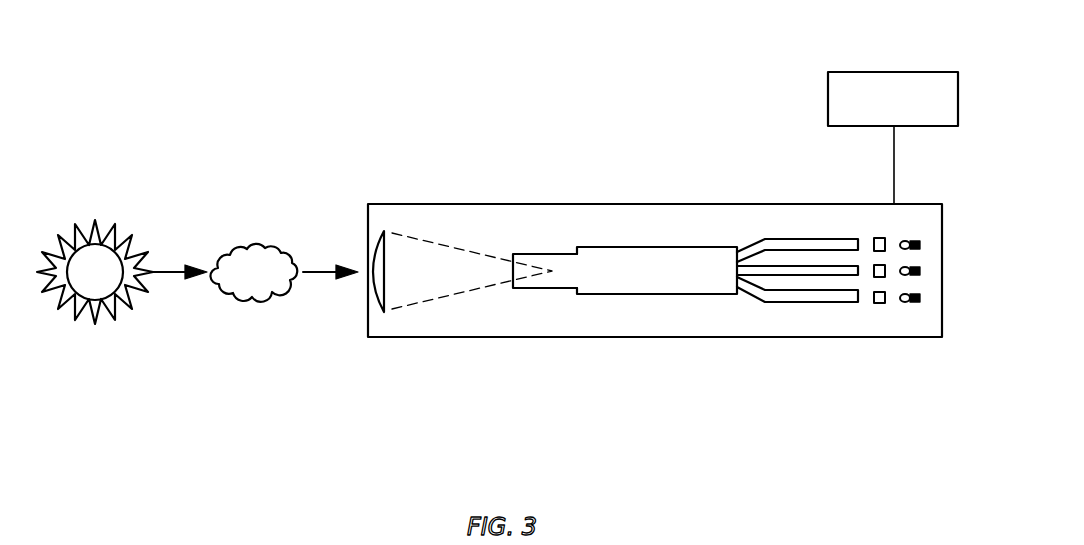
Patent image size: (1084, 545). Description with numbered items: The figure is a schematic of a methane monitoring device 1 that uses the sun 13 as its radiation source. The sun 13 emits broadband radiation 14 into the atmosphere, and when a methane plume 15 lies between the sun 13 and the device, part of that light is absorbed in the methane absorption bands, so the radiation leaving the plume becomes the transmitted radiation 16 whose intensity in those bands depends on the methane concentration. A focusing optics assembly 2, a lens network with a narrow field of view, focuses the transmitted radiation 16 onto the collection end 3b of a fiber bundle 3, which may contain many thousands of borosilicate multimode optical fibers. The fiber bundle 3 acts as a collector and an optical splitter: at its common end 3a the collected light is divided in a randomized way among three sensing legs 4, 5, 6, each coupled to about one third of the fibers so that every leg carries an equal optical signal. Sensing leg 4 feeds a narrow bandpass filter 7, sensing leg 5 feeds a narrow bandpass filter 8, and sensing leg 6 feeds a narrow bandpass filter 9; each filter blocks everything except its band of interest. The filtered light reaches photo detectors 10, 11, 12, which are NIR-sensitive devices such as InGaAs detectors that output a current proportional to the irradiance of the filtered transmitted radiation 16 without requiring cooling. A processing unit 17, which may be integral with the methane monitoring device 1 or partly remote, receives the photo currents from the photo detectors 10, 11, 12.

The methane monitoring device 1 is at (462, 105).
The focusing optics assembly 2 is at (383, 314).
The fiber bundle 3 is at (625, 323).
The common end 3a is at (713, 295).
The collection end 3b is at (542, 289).
The sensing leg 4 is at (782, 303).
The sensing leg 5 is at (815, 278).
The sensing leg 6 is at (781, 239).
The narrow bandpass filter 7 is at (880, 304).
The narrow bandpass filter 8 is at (874, 272).
The narrow bandpass filter 9 is at (880, 237).
The photo detector 10 is at (907, 305).
The photo detector 11 is at (907, 277).
The photo detector 12 is at (907, 240).
The sun 13 is at (90, 250).
The broadband radiation 14 is at (173, 270).
The methane plume 15 is at (250, 250).
The transmitted radiation 16 is at (323, 268).
The processing unit 17 is at (828, 92).